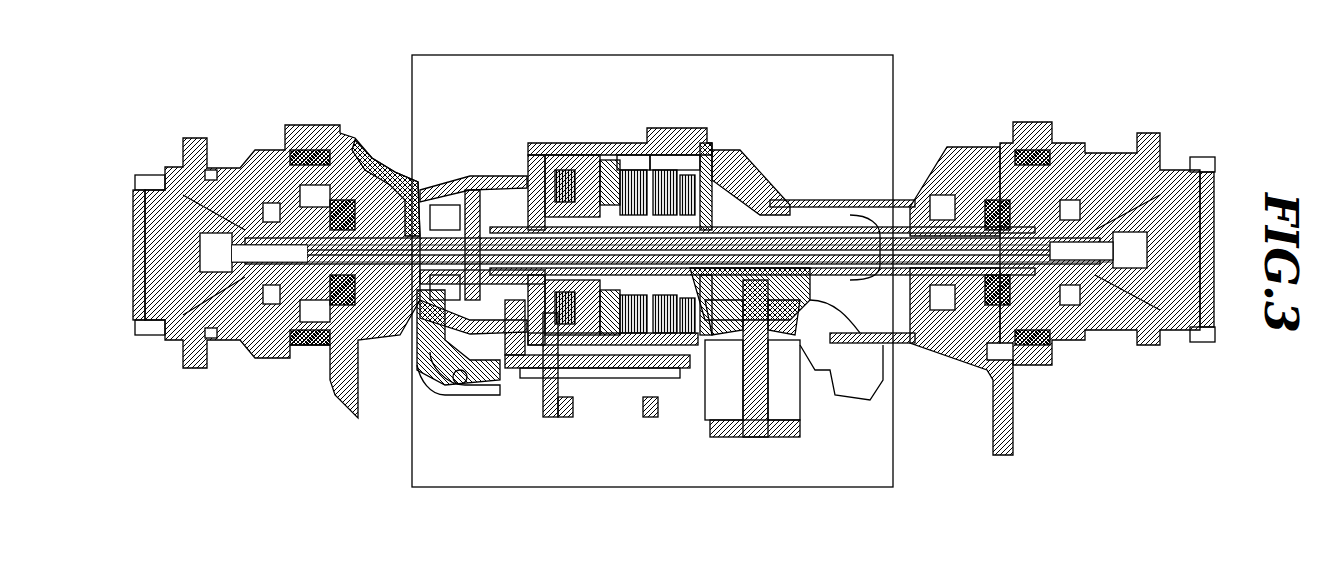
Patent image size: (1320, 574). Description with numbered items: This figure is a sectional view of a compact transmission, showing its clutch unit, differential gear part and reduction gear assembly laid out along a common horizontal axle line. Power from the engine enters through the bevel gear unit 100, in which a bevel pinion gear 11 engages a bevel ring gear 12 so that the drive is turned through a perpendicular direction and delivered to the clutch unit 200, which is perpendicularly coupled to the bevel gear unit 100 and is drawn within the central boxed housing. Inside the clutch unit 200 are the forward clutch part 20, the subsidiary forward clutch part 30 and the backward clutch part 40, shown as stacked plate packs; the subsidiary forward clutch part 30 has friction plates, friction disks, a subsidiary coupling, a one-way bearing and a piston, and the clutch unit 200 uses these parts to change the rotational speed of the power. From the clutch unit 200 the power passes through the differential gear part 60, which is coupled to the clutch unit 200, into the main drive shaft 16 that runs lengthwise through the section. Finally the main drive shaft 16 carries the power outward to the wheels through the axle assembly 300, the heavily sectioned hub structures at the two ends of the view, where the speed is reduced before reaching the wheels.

The axle assembly 300 is at (297, 118).
The bevel gear unit 100 is at (763, 183).
The clutch unit 200 is at (633, 133).
The main drive shaft 16 is at (403, 150).
The differential gear part 60 is at (470, 196).
The subsidiary forward clutch part 30 is at (558, 164).
The backward clutch part 40 is at (630, 163).
The forward clutch part 20 is at (666, 166).
The bevel ring gear 12 is at (720, 187).
The bevel pinion gear 11 is at (780, 290).